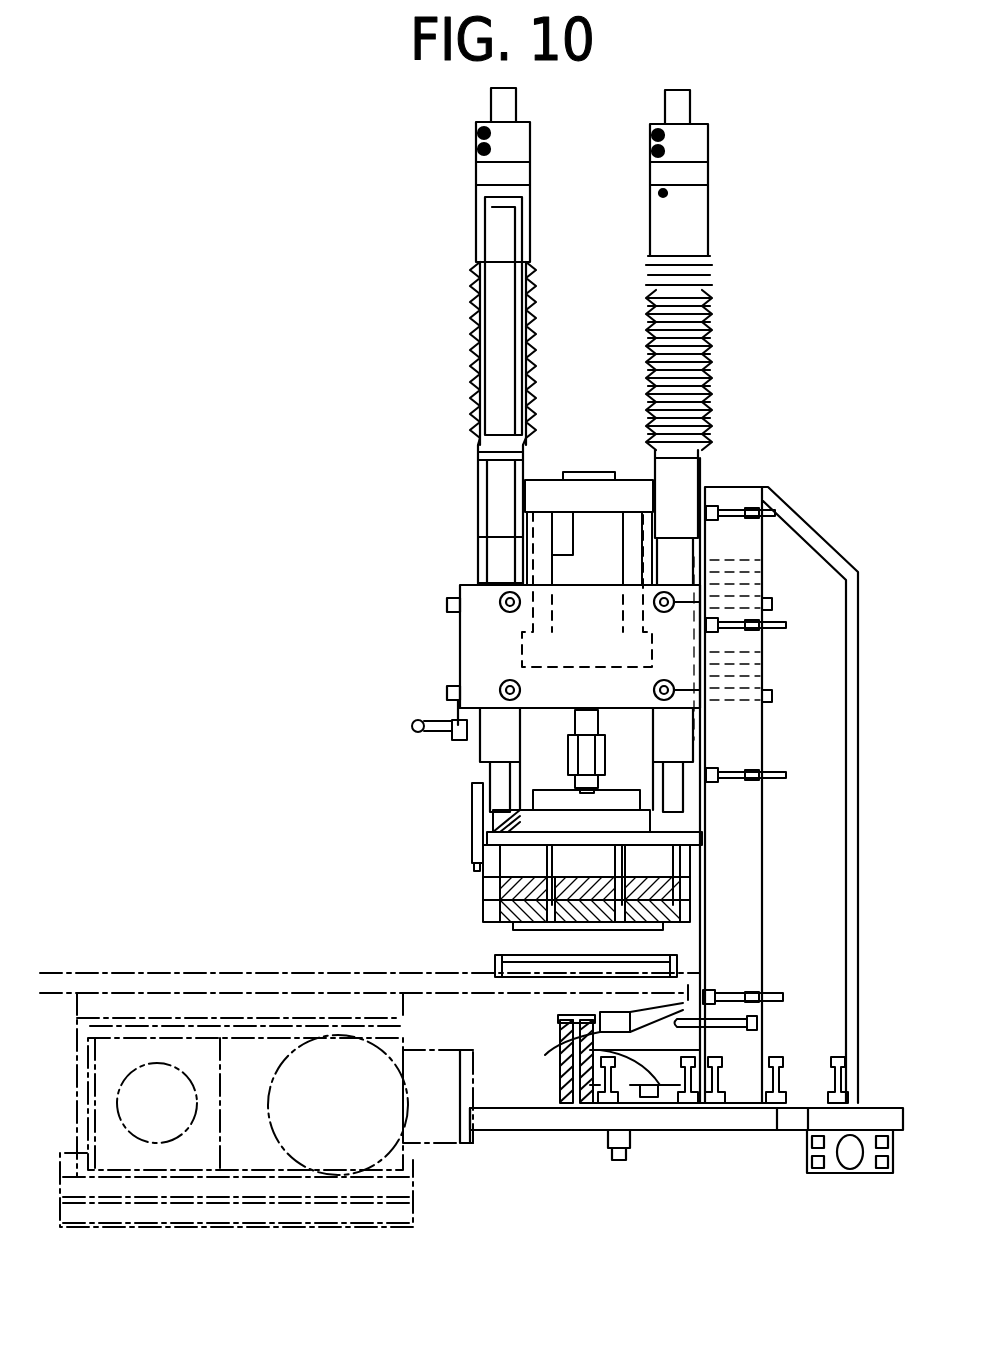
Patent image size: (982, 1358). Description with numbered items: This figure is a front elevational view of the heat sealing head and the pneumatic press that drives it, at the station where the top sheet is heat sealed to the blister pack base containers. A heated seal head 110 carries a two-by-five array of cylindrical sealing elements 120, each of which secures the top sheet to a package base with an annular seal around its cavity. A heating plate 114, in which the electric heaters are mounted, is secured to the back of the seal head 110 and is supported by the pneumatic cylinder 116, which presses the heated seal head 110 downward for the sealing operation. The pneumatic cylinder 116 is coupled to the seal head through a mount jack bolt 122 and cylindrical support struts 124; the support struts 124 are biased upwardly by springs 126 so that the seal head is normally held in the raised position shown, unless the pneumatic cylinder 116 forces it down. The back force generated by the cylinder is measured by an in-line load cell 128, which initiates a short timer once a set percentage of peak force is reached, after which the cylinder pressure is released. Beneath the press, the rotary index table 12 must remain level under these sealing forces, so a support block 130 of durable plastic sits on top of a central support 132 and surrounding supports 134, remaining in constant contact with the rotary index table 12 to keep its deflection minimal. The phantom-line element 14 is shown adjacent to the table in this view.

The rotary index table 12 is at (410, 1003).
The workpiece plate 14 is at (495, 965).
The heated seal head 110 is at (490, 903).
The heating plate 114 is at (490, 880).
The pneumatic cylinder 116 is at (573, 605).
The cylindrical sealing elements 120 is at (565, 932).
The mount jack bolt 122 is at (520, 743).
The cylindrical support struts 124 is at (665, 101).
The springs 126 is at (478, 302).
The in-line load cell 128 is at (618, 710).
The support block 130 is at (575, 1008).
The central support 132 is at (665, 1115).
The surrounding supports 134 is at (560, 1082).